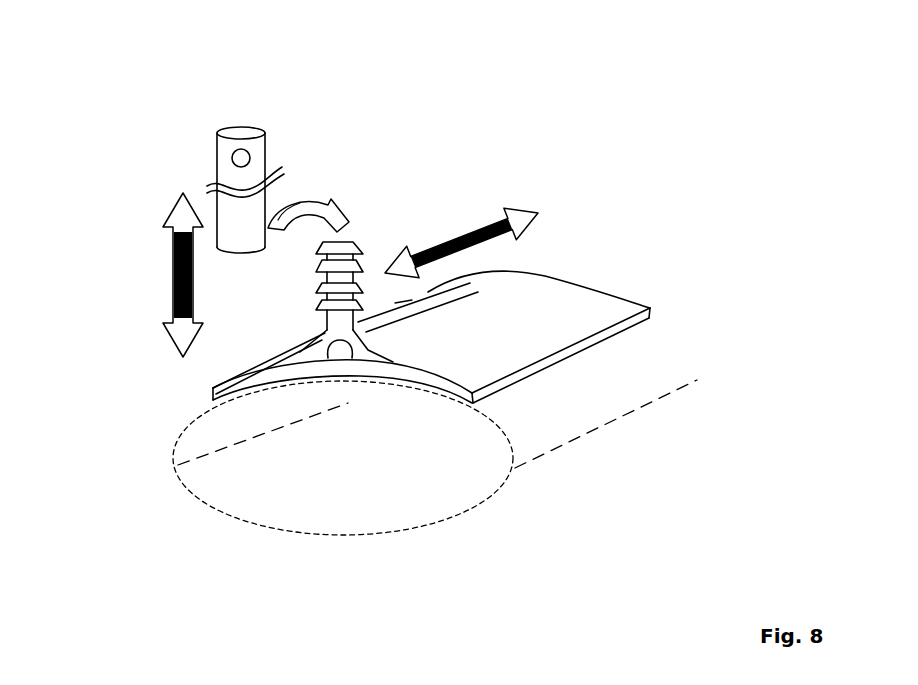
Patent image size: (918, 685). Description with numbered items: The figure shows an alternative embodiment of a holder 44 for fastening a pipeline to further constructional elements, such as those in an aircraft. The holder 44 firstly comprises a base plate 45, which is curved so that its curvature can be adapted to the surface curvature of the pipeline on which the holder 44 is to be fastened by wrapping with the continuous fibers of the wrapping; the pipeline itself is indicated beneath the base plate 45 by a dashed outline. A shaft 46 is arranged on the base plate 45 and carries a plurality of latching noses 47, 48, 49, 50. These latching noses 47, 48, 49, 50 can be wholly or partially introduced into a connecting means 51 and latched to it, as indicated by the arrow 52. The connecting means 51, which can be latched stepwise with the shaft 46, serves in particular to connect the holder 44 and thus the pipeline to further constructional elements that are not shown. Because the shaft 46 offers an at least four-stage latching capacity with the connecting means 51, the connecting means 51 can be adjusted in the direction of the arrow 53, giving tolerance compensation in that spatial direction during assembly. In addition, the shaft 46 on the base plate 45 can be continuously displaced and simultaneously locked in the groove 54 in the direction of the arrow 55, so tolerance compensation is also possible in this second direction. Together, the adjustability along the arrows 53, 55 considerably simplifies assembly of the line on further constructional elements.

The holder 44 is at (392, 80).
The base plate 45 is at (608, 304).
The shaft 46 is at (356, 195).
The latching nose 47 is at (350, 243).
The latching nose 48 is at (352, 268).
The latching nose 49 is at (323, 289).
The latching nose 50 is at (321, 305).
The connecting means 51 is at (241, 134).
The arrow 52 is at (324, 203).
The arrow 53 is at (172, 279).
The groove 54 is at (452, 303).
The arrow 55 is at (484, 222).